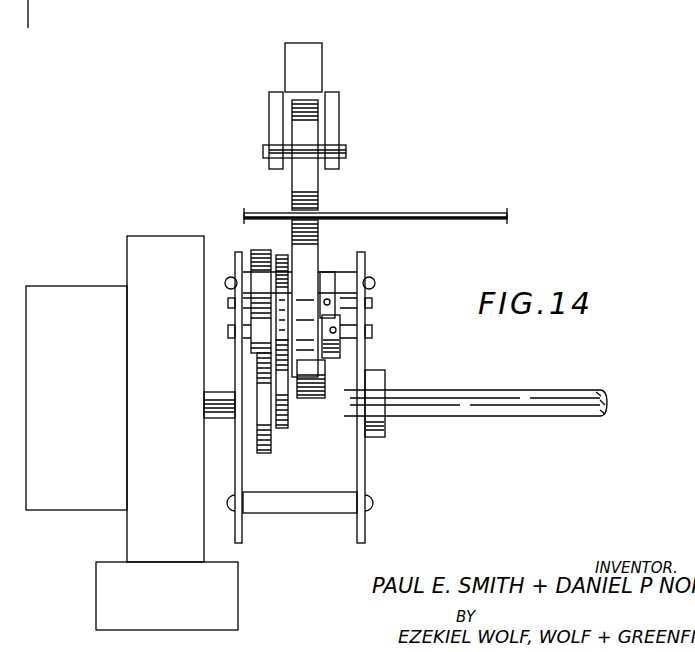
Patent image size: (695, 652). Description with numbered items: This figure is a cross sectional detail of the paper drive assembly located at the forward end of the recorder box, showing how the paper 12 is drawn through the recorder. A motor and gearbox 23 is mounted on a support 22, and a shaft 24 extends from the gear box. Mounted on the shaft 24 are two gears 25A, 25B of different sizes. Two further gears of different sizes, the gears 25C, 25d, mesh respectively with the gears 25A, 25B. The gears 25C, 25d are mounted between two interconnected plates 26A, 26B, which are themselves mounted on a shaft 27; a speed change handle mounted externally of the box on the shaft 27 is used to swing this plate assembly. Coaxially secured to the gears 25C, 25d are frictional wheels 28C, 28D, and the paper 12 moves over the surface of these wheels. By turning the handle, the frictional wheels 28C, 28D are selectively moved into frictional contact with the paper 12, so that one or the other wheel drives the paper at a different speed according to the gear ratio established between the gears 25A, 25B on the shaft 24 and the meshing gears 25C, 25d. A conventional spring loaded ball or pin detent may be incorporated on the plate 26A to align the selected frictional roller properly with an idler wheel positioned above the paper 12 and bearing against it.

The paper 12 is at (432, 213).
The support 22 is at (96, 606).
The motor and gearbox 23 is at (126, 265).
The shaft 24 is at (210, 405).
The gear 25A is at (265, 456).
The gear 25B is at (284, 432).
The gear 25C is at (254, 250).
The gear 25d is at (281, 254).
The plate 26A is at (247, 540).
The plate 26B is at (367, 530).
The shaft 27 is at (463, 392).
The frictional wheel 28C is at (320, 225).
The frictional wheel 28D is at (329, 380).